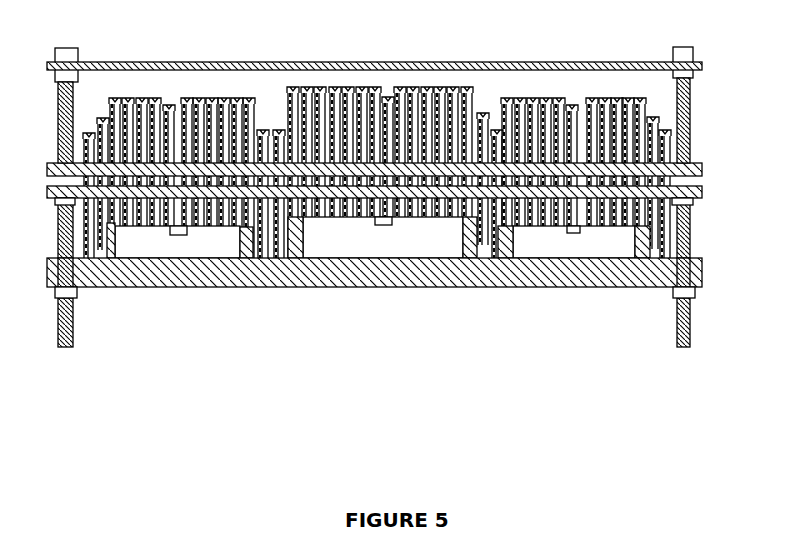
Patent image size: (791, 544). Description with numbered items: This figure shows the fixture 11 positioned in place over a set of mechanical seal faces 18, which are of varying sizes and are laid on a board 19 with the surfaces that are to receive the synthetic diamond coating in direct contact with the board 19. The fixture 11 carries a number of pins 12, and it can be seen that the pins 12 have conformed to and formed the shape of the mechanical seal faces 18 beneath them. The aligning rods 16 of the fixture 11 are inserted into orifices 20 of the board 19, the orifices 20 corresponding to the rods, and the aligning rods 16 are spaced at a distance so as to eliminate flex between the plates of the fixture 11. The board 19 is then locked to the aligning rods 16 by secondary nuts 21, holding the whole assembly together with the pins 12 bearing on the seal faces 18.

The fixture 11 is at (545, 62).
The pins 12 is at (650, 117).
The aligning rods 16 is at (62, 247).
The mechanical seal faces 18 is at (187, 235).
The board 19 is at (612, 287).
The orifices 20 is at (80, 278).
The secondary nuts 21 is at (78, 300).